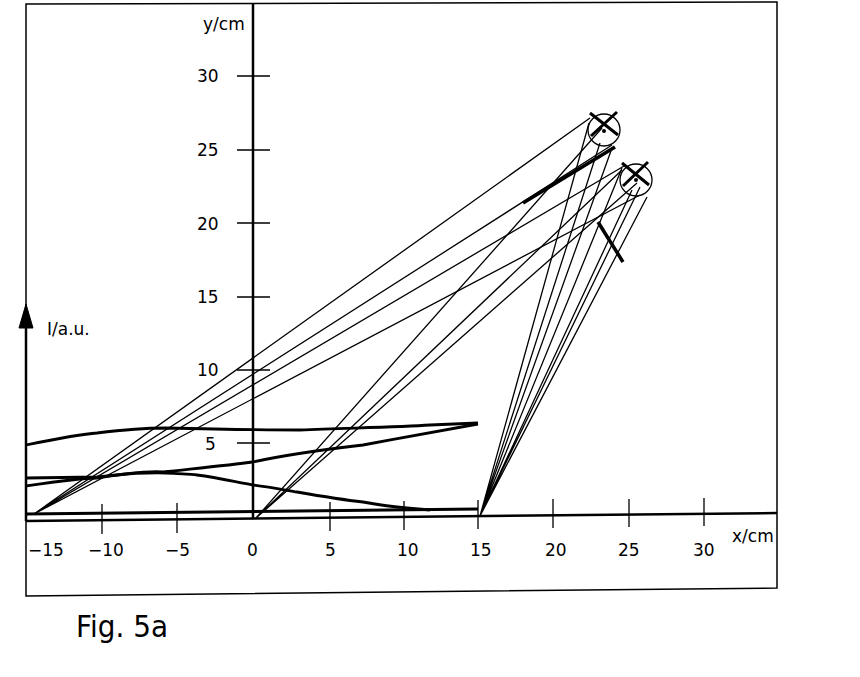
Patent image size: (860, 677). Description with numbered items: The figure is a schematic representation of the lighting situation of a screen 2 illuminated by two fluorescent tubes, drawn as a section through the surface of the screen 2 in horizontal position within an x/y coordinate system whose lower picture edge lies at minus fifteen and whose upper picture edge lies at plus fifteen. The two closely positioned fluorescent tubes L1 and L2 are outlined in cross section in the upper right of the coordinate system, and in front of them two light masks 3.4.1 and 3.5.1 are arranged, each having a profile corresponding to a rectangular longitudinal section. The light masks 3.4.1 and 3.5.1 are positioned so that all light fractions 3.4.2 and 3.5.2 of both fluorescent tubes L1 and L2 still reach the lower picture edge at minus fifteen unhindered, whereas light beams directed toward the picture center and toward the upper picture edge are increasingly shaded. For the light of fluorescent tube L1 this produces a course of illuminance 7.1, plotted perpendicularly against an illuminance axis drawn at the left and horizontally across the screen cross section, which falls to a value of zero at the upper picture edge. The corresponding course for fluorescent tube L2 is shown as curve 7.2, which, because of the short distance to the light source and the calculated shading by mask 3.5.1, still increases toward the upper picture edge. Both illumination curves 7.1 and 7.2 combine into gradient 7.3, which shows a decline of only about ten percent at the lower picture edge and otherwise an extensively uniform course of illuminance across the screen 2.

The screen 2 is at (376, 524).
The course of illuminance 7.1 is at (382, 497).
The course of illuminance 7.2 is at (372, 438).
The gradient 7.3 is at (80, 432).
The light mask 3.4.1 is at (550, 180).
The light fractions 3.4.2 is at (403, 270).
The light mask 3.5.1 is at (621, 250).
The light fractions 3.5.2 is at (383, 365).
The fluorescent tube L1 is at (621, 122).
The fluorescent tube L2 is at (652, 172).